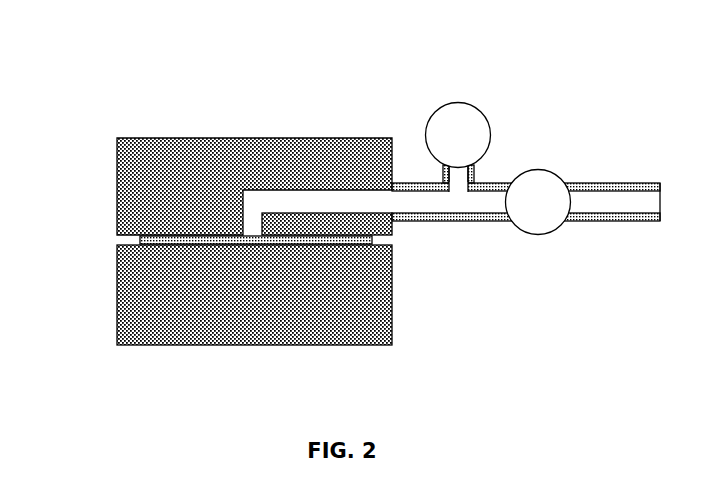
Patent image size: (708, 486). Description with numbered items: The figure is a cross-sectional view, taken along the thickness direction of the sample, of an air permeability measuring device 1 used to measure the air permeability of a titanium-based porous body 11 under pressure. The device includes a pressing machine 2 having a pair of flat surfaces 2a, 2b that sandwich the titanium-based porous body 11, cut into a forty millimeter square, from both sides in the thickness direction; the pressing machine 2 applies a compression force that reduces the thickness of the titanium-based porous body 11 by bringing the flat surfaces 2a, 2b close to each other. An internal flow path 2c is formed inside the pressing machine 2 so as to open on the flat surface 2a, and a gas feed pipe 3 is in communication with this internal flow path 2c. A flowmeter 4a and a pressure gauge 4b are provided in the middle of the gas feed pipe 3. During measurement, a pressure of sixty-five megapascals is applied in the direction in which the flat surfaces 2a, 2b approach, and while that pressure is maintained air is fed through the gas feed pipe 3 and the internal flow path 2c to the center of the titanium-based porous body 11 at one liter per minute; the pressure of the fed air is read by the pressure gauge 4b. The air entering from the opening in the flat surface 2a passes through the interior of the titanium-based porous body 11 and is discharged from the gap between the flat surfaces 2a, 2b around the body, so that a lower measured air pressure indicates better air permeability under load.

The air permeability measuring device 1 is at (118, 83).
The pressing machine 2 is at (98, 325).
The flat surface 2a is at (118, 241).
The flat surface 2b is at (392, 242).
The internal flow path 2c is at (313, 200).
The gas feed pipe 3 is at (604, 183).
The flowmeter 4a is at (547, 223).
The pressure gauge 4b is at (473, 120).
The titanium-based porous body 11 is at (207, 240).